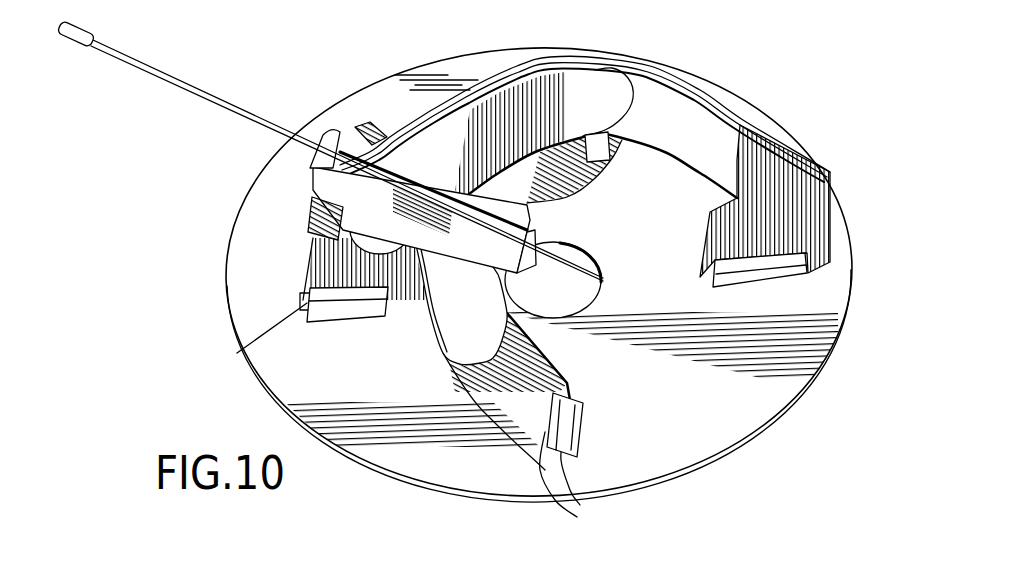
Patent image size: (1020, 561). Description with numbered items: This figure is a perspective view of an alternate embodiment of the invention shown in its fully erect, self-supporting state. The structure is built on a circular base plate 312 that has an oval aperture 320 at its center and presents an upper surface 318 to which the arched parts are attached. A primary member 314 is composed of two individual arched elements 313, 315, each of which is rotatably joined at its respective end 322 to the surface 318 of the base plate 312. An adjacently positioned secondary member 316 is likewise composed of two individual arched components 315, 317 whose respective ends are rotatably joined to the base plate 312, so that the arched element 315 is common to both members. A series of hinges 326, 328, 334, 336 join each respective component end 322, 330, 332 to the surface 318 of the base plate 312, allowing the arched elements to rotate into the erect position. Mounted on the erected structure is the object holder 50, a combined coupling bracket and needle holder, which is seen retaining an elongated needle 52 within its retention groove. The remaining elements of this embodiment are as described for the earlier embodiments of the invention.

The elongated needle 52 is at (138, 57).
The object holder 50 is at (380, 140).
The circular base plate 312 is at (747, 445).
The arched element 313 is at (510, 400).
The primary member 314 is at (417, 347).
The arched element 315 is at (446, 311).
The secondary member 316 is at (705, 136).
The arched component 317 is at (645, 72).
The surface 318 is at (647, 392).
The oval aperture 320 is at (567, 297).
The end 322 is at (530, 465).
The hinge 326 is at (545, 450).
The hinge 328 is at (612, 143).
The component end 330 is at (778, 252).
The component end 332 is at (307, 273).
The hinge 334 is at (763, 278).
The hinge 336 is at (238, 345).